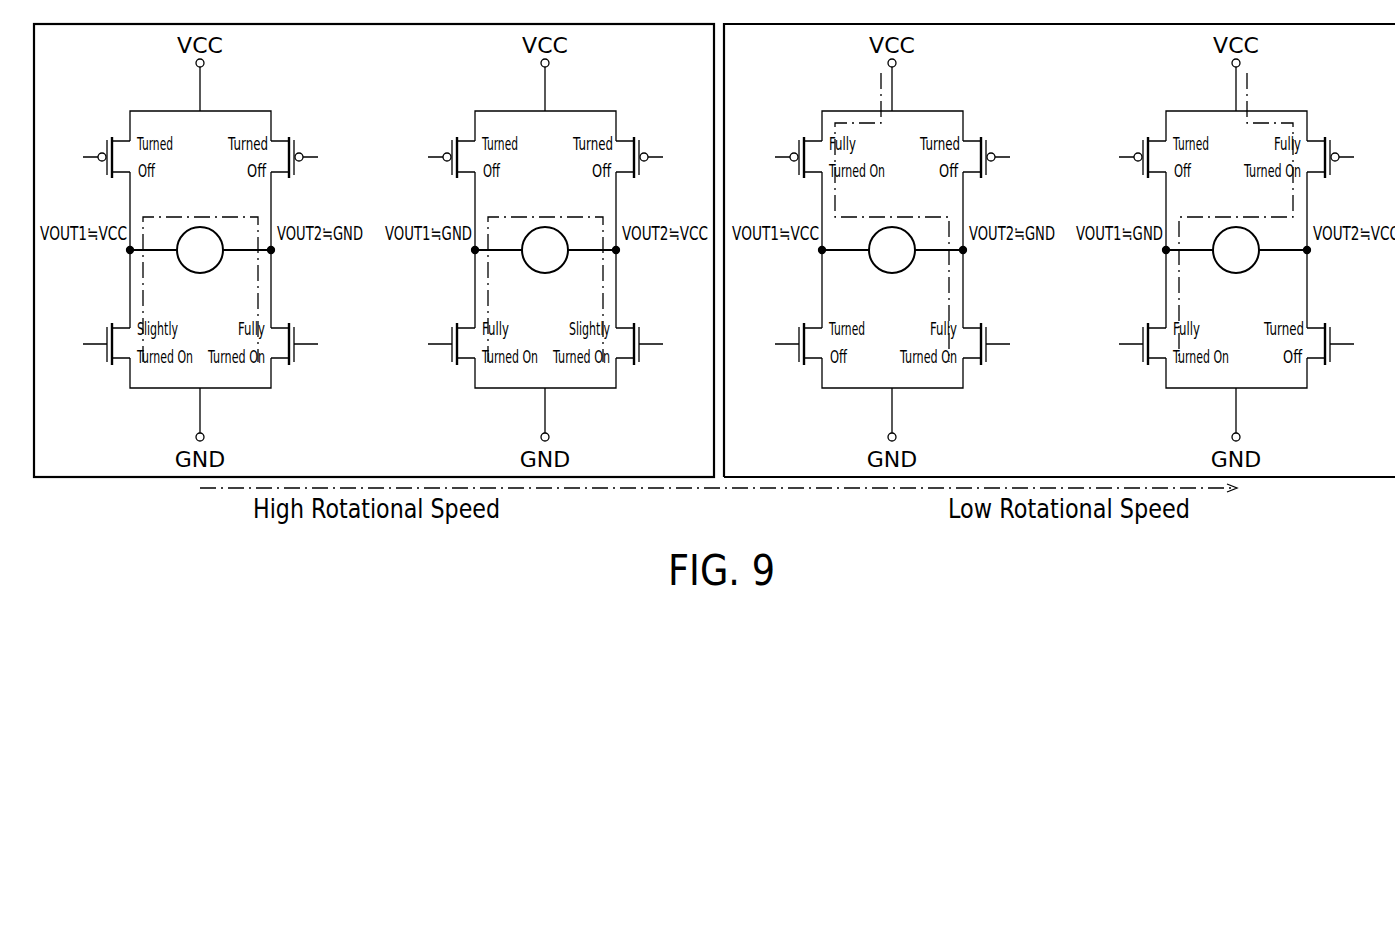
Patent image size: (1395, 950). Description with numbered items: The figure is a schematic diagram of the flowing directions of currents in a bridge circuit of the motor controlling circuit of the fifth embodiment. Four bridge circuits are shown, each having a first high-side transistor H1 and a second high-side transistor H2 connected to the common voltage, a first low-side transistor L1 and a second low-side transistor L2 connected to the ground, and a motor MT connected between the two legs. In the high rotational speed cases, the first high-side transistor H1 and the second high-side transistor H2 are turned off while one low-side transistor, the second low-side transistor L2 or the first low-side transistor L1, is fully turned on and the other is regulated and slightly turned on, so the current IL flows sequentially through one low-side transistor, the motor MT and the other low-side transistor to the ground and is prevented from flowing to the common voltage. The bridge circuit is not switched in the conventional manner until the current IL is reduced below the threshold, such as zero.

The first high-side transistor H1 is at (105, 147).
The second high-side transistor H2 is at (296, 147).
The first low-side transistor L1 is at (105, 355).
The second low-side transistor L2 is at (296, 355).
The motor MT is at (207, 272).
The current IL is at (718, 217).